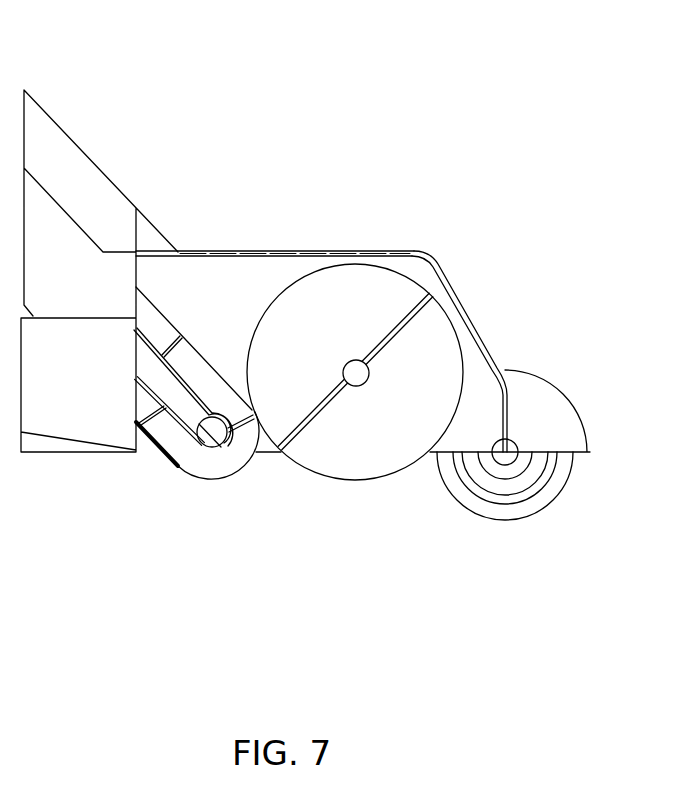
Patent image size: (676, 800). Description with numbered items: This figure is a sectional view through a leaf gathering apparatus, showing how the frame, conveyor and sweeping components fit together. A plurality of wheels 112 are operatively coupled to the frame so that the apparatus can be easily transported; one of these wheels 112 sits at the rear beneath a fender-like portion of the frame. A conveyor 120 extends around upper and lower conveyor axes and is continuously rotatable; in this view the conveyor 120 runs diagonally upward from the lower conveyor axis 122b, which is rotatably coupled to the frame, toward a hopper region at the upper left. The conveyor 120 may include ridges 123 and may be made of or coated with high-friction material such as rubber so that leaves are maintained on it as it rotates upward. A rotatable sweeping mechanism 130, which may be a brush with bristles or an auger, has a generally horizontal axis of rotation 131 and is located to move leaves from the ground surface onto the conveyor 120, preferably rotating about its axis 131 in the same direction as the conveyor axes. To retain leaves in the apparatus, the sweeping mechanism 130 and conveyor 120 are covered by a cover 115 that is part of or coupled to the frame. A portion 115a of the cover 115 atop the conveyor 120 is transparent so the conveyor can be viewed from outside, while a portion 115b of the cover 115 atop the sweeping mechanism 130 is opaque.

The wheels 112 is at (518, 523).
The cover 115 is at (443, 258).
The portion of the cover 115a is at (70, 137).
The portion of the cover 115b is at (309, 252).
The conveyor 120 is at (145, 337).
The lower conveyor axis 122b is at (197, 440).
The ridges 123 is at (175, 337).
The rotatable sweeping mechanism 130 is at (402, 275).
The axis of rotation 131 is at (369, 372).